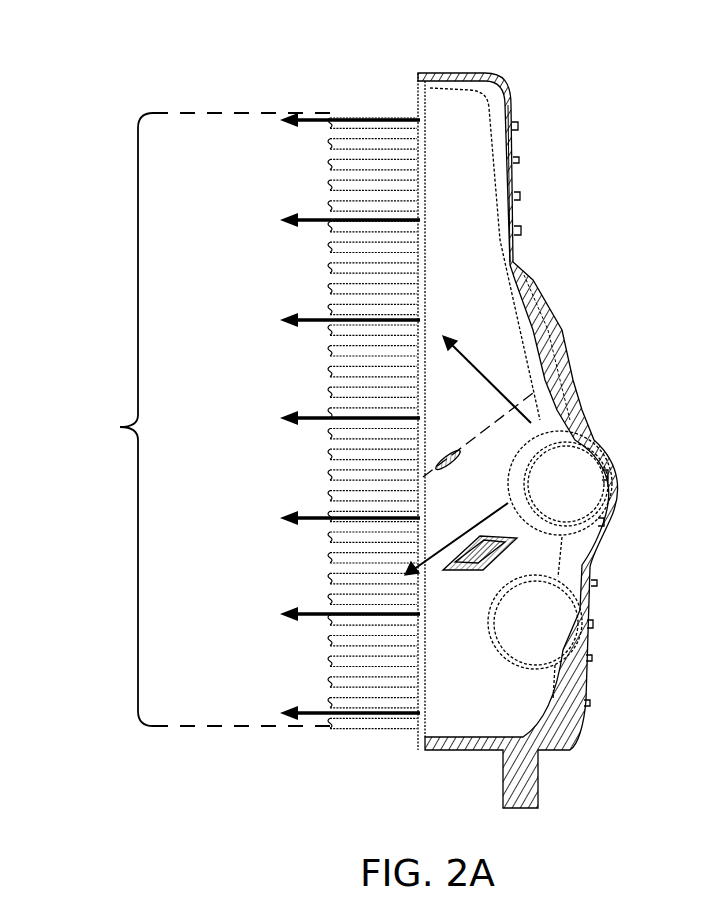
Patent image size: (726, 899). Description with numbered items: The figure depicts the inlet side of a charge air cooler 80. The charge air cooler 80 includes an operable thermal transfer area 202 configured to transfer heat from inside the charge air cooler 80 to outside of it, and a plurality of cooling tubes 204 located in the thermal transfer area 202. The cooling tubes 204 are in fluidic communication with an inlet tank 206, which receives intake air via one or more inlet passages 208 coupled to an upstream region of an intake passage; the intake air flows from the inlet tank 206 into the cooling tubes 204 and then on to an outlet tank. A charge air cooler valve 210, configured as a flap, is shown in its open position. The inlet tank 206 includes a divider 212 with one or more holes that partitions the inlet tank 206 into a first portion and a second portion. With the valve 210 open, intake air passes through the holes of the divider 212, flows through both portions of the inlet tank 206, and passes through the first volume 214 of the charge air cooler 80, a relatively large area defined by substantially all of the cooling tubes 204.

The charge air cooler 80 is at (533, 58).
The operable thermal transfer area 202 is at (329, 388).
The cooling tubes 204 is at (333, 190).
The inlet tank 206 is at (517, 188).
The inlet passages 208 is at (603, 470).
The charge air cooler valve 210 is at (540, 318).
The divider 212 is at (490, 432).
The first volume 214 is at (249, 419).